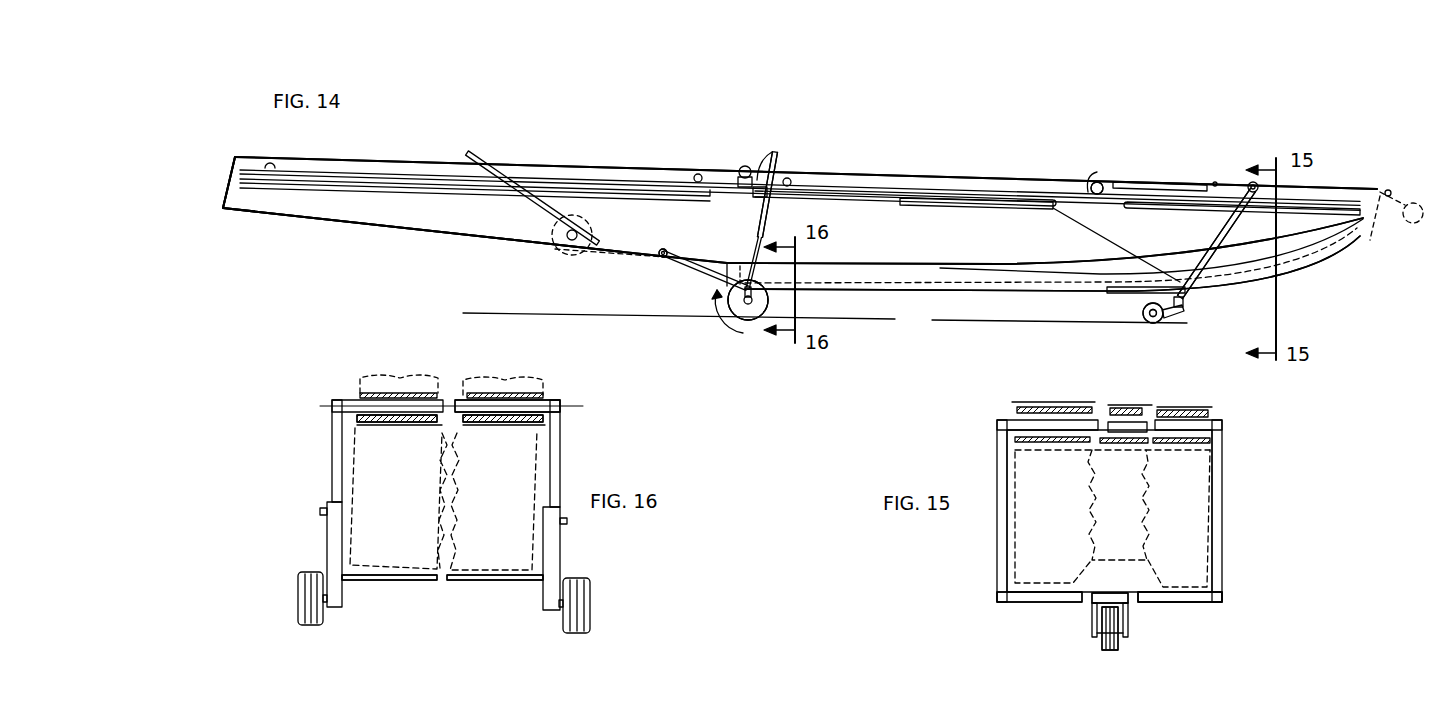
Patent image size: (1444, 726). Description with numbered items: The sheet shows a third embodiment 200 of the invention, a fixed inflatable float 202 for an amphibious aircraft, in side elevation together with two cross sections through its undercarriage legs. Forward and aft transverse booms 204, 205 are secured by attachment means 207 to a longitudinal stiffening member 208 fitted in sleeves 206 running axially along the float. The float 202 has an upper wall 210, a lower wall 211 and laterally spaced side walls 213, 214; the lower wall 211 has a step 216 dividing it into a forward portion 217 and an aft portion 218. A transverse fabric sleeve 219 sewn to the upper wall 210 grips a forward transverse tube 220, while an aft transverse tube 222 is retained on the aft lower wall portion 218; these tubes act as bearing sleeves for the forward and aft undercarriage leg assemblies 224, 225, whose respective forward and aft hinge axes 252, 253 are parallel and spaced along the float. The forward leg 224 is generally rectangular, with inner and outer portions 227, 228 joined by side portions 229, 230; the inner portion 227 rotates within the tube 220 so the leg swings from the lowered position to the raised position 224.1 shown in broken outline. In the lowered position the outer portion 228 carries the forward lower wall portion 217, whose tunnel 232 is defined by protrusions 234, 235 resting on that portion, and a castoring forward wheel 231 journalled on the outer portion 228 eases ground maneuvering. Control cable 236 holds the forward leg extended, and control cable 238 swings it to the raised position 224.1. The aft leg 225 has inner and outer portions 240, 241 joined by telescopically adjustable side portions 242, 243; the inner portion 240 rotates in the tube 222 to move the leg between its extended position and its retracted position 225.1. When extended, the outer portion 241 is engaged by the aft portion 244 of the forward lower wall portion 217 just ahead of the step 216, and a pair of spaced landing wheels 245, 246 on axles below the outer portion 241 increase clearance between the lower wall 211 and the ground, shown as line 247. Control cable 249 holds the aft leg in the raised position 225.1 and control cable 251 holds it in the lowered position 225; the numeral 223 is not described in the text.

In FIG. 14, the third embodiment 200 is at (896, 115).
In FIG. 14, the float 202 is at (800, 210).
In FIG. 14, the forward transverse boom 204 is at (1102, 181).
In FIG. 14, the aft transverse boom 205 is at (744, 166).
In FIG. 14, the sleeves 206 is at (532, 177).
In FIG. 14, the attachment means 207 is at (780, 147).
In FIG. 14, the stiffening member 208 is at (722, 176).
In FIG. 14, the upper wall 210 is at (627, 171).
In FIG. 15, the upper wall 210 is at (1000, 442).
In FIG. 14, the lower wall 211 is at (882, 290).
In FIG. 16, the lower wall 211 is at (388, 580).
In FIG. 15, the lower wall 211 is at (1047, 602).
In FIG. 14, the side wall 213 is at (945, 248).
In FIG. 16, the side wall 213 is at (350, 476).
In FIG. 15, the side wall 213 is at (1013, 532).
In FIG. 16, the side wall 214 is at (563, 450).
In FIG. 15, the side wall 214 is at (1210, 495).
In FIG. 14, the step 216 is at (724, 300).
In FIG. 14, the forward portion of the lower wall 217 is at (992, 293).
In FIG. 16, the forward portion of the lower wall 217 is at (495, 577).
In FIG. 15, the forward portion of the lower wall 217 is at (1180, 597).
In FIG. 14, the aft portion of the lower wall 218 is at (427, 233).
In FIG. 14, the transverse fabric sleeve 219 is at (1250, 183).
In FIG. 15, the transverse fabric sleeve 219 is at (1130, 405).
In FIG. 14, the forward transverse tube 220 is at (1254, 193).
In FIG. 15, the forward transverse tube 220 is at (1142, 413).
In FIG. 14, the aft transverse tube 222 is at (661, 258).
In FIG. 16, the aft transverse tube 222 is at (358, 386).
In FIG. 14, the link 223 is at (658, 257).
In FIG. 16, the link 223 is at (483, 430).
In FIG. 14, the forward undercarriage leg assembly 224 is at (1192, 312).
In FIG. 15, the forward undercarriage leg assembly 224 is at (955, 603).
In FIG. 14, the raised position of forward leg 224.1 is at (1393, 226).
In FIG. 14, the aft undercarriage leg assembly 225 is at (735, 320).
In FIG. 16, the aft undercarriage leg assembly 225 is at (620, 574).
In FIG. 14, the retracted position of aft leg 225.1 is at (627, 242).
In FIG. 15, the inner portion 227 is at (1213, 422).
In FIG. 15, the outer portion 228 is at (1178, 602).
In FIG. 15, the side portion 229 is at (997, 557).
In FIG. 15, the side portion 230 is at (1222, 548).
In FIG. 14, the castoring forward wheel 231 is at (1135, 327).
In FIG. 15, the castoring forward wheel 231 is at (1108, 650).
In FIG. 15, the tunnel 232 is at (1120, 577).
In FIG. 15, the protrusion 234 is at (1003, 602).
In FIG. 15, the protrusion 235 is at (1227, 590).
In FIG. 14, the control cable 236 is at (1010, 210).
In FIG. 14, the control cable 238 is at (1156, 182).
In FIG. 16, the inner portion 240 is at (530, 408).
In FIG. 16, the outer portion 241 is at (483, 583).
In FIG. 16, the side portion 242 is at (327, 523).
In FIG. 16, the side portion 243 is at (563, 543).
In FIG. 14, the aft portion of the forward lower wall portion 244 is at (812, 288).
In FIG. 14, the landing wheel 245 is at (752, 313).
In FIG. 16, the landing wheel 245 is at (310, 613).
In FIG. 14, the landing wheel 246 is at (748, 300).
In FIG. 16, the landing wheel 246 is at (590, 608).
In FIG. 14, the ground 247 is at (503, 313).
In FIG. 14, the control cable 249 is at (553, 210).
In FIG. 14, the control cable 251 is at (768, 205).
In FIG. 15, the forward hinge axis 252 is at (985, 423).
In FIG. 16, the aft hinge axis 253 is at (582, 411).